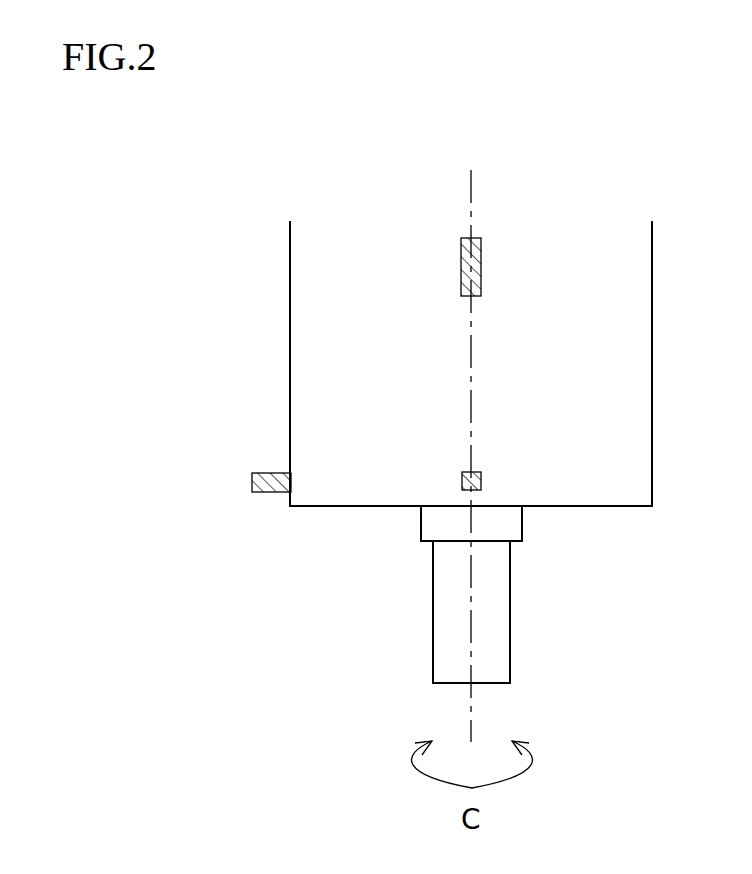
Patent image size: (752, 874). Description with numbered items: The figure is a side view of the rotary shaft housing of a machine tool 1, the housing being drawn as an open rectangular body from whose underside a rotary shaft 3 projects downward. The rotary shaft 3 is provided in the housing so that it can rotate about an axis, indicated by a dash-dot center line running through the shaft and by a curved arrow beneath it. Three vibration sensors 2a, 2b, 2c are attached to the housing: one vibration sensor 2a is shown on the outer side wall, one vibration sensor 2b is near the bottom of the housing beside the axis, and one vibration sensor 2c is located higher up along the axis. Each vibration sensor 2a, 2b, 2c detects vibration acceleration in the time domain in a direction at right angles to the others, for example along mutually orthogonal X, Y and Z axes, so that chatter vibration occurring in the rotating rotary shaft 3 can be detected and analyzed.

The machine tool 1 is at (300, 331).
The vibration sensor 2a is at (252, 480).
The vibration sensor 2b is at (483, 480).
The vibration sensor 2c is at (483, 266).
The rotary shaft 3 is at (445, 609).